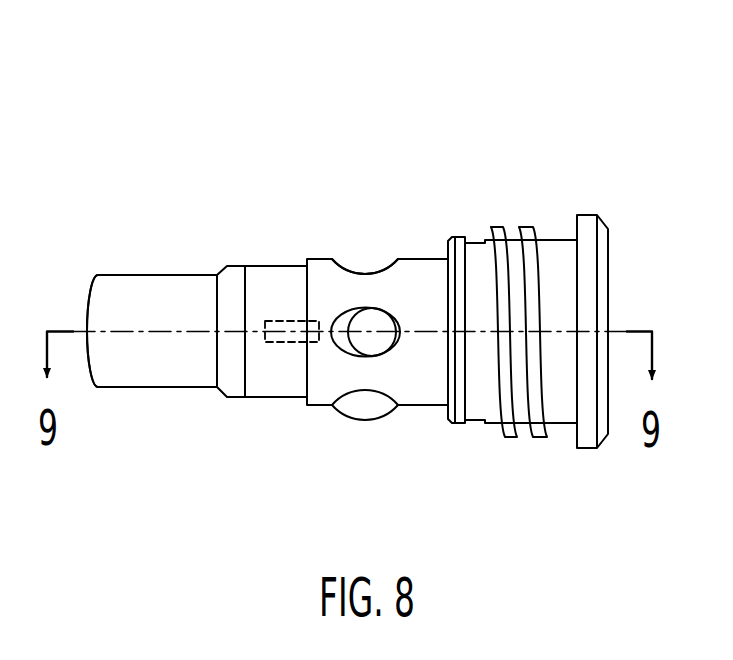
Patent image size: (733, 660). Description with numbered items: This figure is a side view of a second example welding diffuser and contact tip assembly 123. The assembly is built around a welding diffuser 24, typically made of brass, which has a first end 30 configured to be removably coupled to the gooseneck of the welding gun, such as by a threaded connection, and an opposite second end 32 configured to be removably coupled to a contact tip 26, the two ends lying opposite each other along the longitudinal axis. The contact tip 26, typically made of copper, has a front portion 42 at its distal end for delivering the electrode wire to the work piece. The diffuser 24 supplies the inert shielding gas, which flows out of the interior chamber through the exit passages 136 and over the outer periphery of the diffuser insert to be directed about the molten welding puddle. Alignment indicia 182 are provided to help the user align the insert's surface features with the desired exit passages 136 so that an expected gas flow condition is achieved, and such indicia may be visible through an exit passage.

The second example welding diffuser and contact tip assembly 123 is at (151, 118).
The front portion 42 is at (92, 270).
The contact tip 26 is at (120, 372).
The second end 32 is at (216, 258).
The welding diffuser 24 is at (260, 378).
The alignment indicia 182 is at (280, 318).
The exit passages 136 is at (386, 258).
The first end 30 is at (602, 204).